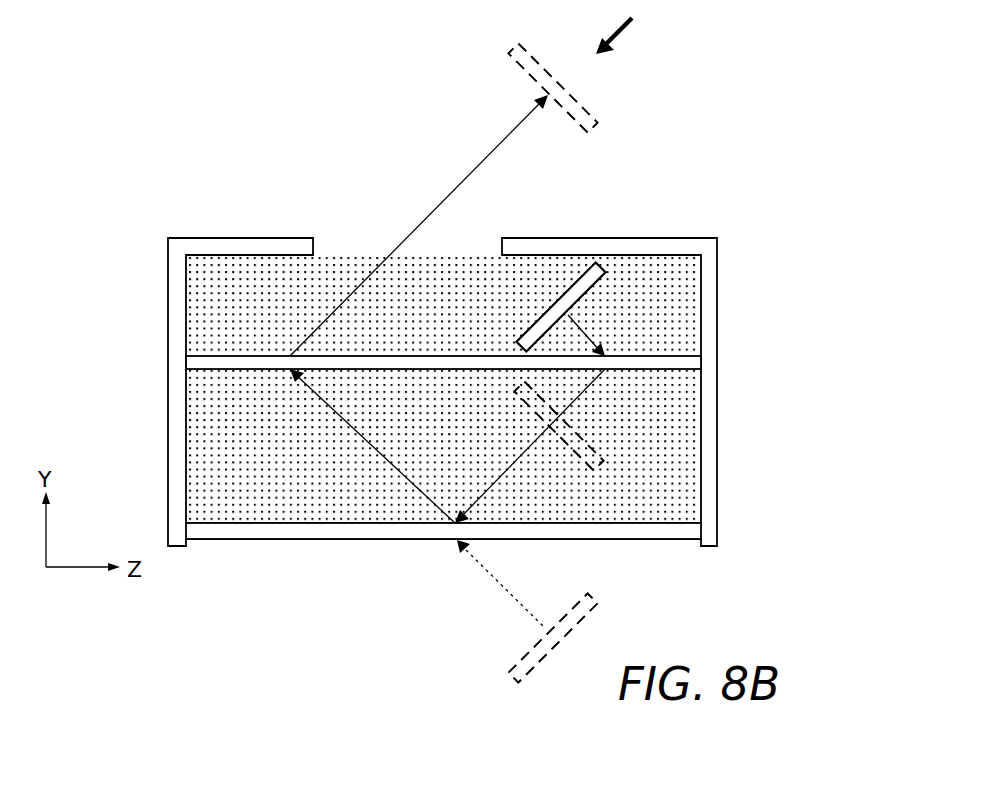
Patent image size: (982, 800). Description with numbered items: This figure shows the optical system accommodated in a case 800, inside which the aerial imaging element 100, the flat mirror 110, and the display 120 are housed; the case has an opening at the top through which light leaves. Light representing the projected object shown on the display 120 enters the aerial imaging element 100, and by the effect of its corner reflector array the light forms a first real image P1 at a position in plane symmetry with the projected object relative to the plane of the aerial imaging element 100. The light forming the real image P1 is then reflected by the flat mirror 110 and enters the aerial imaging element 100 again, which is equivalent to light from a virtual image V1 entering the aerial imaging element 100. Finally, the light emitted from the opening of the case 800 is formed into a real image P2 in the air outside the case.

The case 800 is at (688, 232).
The aerial imaging element 100 is at (240, 356).
The flat mirror 110 is at (238, 523).
The display 120 is at (600, 284).
The first real image P1 is at (600, 460).
The real image P2 is at (600, 127).
The virtual image V1 is at (590, 602).